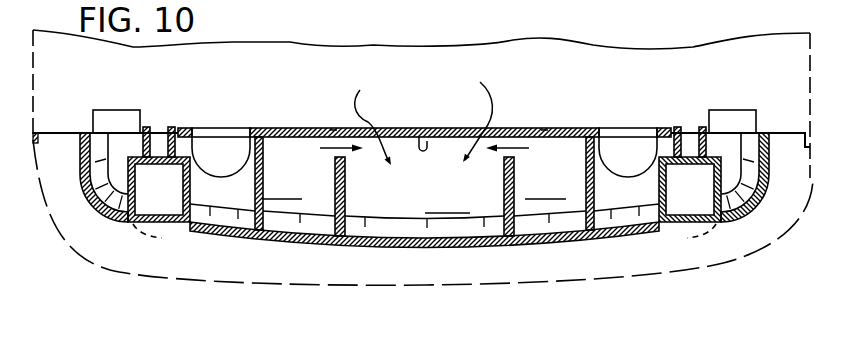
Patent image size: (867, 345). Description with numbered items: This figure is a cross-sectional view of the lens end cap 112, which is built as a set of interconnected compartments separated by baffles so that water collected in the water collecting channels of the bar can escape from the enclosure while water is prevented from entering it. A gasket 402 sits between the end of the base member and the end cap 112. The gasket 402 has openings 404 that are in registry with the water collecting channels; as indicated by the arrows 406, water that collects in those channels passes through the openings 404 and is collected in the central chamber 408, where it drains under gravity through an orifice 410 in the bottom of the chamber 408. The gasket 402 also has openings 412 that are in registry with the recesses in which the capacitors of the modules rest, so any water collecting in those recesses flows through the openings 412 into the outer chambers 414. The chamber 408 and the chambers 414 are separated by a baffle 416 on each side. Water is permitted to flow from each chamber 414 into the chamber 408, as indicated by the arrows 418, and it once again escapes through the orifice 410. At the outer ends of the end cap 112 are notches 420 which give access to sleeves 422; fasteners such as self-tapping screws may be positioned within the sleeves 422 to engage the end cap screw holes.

The lens end cap 112 is at (432, 247).
The gasket 402 is at (532, 128).
The openings 404 is at (373, 126).
The arrows 406 is at (523, 148).
The chamber 408 is at (424, 208).
The orifice 410 is at (419, 150).
The openings 412 is at (285, 132).
The chambers 414 is at (424, 180).
The baffle 416 is at (345, 207).
The arrows 418 is at (333, 130).
The notches 420 is at (177, 207).
The sleeves 422 is at (157, 148).